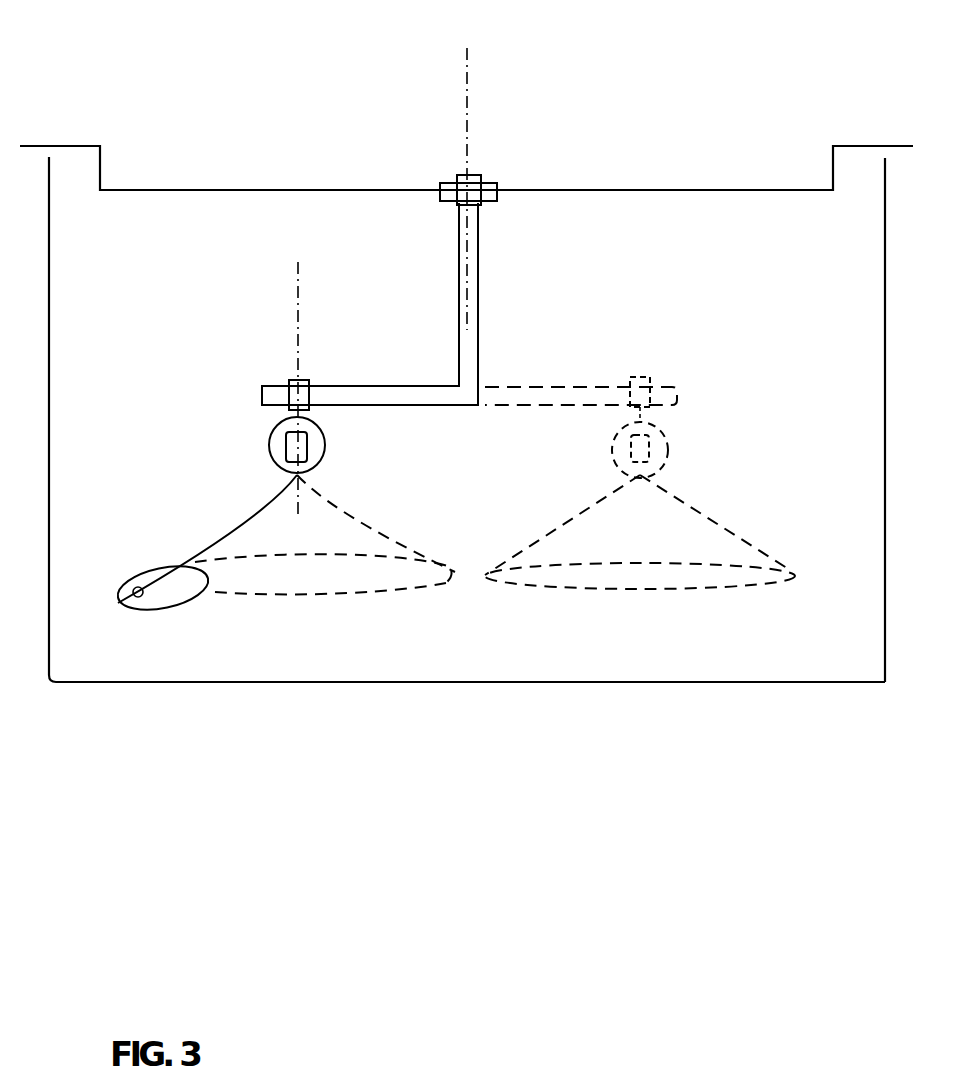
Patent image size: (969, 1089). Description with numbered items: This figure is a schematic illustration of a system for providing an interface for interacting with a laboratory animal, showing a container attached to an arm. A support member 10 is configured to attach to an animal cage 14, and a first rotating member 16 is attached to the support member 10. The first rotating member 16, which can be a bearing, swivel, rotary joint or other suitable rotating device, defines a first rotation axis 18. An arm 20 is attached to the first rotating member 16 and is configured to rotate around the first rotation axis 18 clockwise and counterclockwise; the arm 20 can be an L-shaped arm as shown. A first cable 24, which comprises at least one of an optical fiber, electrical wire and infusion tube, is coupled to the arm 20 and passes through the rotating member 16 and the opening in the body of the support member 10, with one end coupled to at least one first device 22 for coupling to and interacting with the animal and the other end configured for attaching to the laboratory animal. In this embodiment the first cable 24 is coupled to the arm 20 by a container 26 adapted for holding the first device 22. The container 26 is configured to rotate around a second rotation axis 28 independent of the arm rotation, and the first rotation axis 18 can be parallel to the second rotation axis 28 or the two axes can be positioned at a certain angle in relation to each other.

The support member 10 is at (303, 186).
The animal cage 14 is at (882, 467).
The first rotating member 16 is at (503, 199).
The first rotation axis 18 is at (468, 108).
The arm 20 is at (478, 350).
The first device 22 is at (310, 450).
The first cable 24 is at (232, 532).
The container 26 is at (270, 452).
The second rotation axis 28 is at (298, 320).